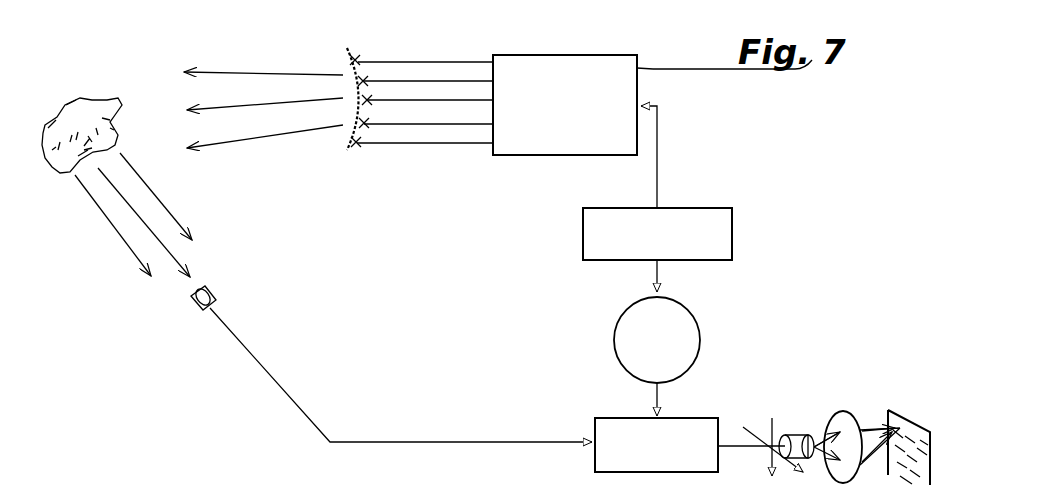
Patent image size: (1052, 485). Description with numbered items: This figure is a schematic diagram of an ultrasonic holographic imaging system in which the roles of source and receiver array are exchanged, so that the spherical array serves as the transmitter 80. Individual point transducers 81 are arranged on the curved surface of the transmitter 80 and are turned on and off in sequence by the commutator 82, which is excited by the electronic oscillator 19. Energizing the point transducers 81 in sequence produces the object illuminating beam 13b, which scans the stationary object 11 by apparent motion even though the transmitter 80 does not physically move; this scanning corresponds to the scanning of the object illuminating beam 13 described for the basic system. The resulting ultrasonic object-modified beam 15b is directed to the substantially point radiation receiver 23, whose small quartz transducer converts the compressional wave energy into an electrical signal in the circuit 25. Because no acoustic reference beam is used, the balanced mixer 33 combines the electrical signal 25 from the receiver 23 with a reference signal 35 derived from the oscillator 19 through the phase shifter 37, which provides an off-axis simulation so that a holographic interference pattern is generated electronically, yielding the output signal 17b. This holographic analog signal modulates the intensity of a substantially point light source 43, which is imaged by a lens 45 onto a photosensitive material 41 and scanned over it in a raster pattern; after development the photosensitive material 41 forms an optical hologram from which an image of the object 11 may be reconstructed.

The object 11 is at (88, 112).
The object illuminating beam 13b is at (262, 72).
The object-modified beam 15b is at (173, 213).
The point radiation receiver 23 is at (212, 294).
The electrical signal circuit 25 is at (305, 410).
The signal 17b is at (429, 474).
The object illuminating beam 13 is at (219, 483).
The spherical array transmitter 80 is at (350, 50).
The point transducers 81 is at (366, 80).
The commutator 82 is at (575, 66).
The oscillator 19 is at (690, 214).
The phase shifter 37 is at (680, 318).
The reference signal 35 is at (660, 395).
The balanced mixer 33 is at (605, 420).
The point light source 43 is at (801, 440).
The lens 45 is at (842, 418).
The photosensitive material 41 is at (912, 418).